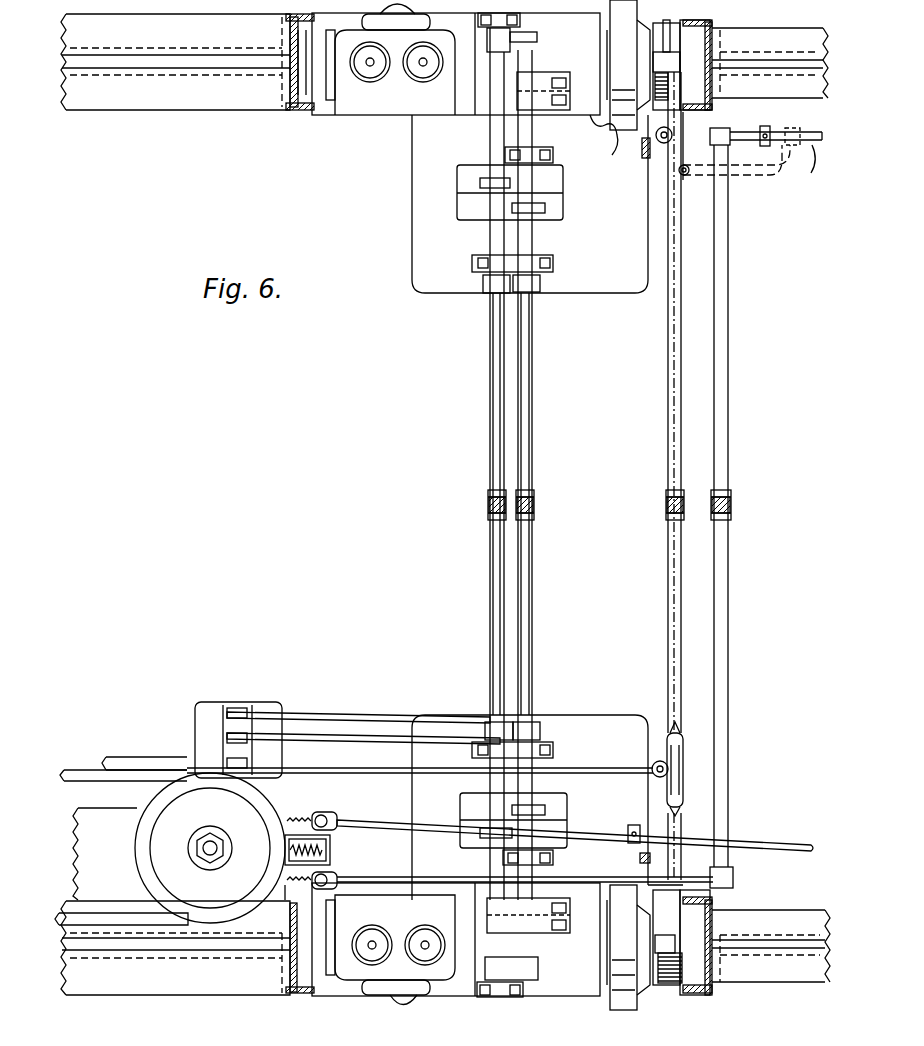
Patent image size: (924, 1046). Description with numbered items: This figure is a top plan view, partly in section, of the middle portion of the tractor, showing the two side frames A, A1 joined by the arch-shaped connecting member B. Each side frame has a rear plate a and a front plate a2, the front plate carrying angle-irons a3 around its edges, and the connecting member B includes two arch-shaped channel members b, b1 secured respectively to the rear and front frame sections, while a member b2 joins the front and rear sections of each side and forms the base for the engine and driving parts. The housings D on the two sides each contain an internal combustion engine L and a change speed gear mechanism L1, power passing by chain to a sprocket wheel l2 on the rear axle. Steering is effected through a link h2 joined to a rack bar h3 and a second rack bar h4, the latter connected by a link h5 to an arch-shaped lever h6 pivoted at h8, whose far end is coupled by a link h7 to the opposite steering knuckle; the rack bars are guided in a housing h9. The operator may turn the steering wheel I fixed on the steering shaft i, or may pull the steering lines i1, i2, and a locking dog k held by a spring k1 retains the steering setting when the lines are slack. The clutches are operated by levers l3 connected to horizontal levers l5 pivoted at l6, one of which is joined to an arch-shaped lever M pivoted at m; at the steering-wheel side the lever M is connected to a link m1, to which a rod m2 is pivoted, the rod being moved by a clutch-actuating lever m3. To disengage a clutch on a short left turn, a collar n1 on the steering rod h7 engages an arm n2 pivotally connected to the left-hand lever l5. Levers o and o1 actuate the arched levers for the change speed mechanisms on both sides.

The side frame A is at (160, 996).
The side frame A1 is at (190, 112).
The plate a is at (142, 62).
The plate a2 is at (790, 60).
The angle-irons a3 is at (765, 944).
The arch-shaped connecting member B is at (295, 112).
The arch-shaped member b is at (300, 110).
The arch-shaped member b1 is at (690, 22).
The connecting member b2 is at (300, 16).
The housing D is at (550, 506).
The steering wheel I is at (210, 848).
The steering shaft i is at (205, 842).
The steering line i1 is at (110, 780).
The steering line i2 is at (97, 915).
The locking dog k is at (332, 850).
The spring k1 is at (328, 840).
The internal combustion engine L is at (459, 504).
The change speed gear mechanism L1 is at (563, 180).
The sprocket wheel l2 is at (625, 918).
The lever l3 is at (673, 62).
The lever l5 is at (668, 200).
The pivot l6 is at (660, 143).
The arch-shaped lever M is at (668, 408).
The pivot m is at (666, 505).
The link m1 is at (683, 752).
The rod m2 is at (618, 774).
The clutch-actuating lever m3 is at (227, 762).
The collar n1 is at (762, 132).
The arm n2 is at (770, 178).
The lever o is at (535, 565).
The lever o1 is at (490, 563).
The link h2 is at (785, 844).
The rack bar h3 is at (315, 812).
The rack bar h4 is at (268, 870).
The link h5 is at (366, 877).
The arch-shaped lever h6 is at (730, 588).
The link h7 is at (811, 173).
The pivot h8 is at (732, 503).
The housing h9 is at (179, 854).